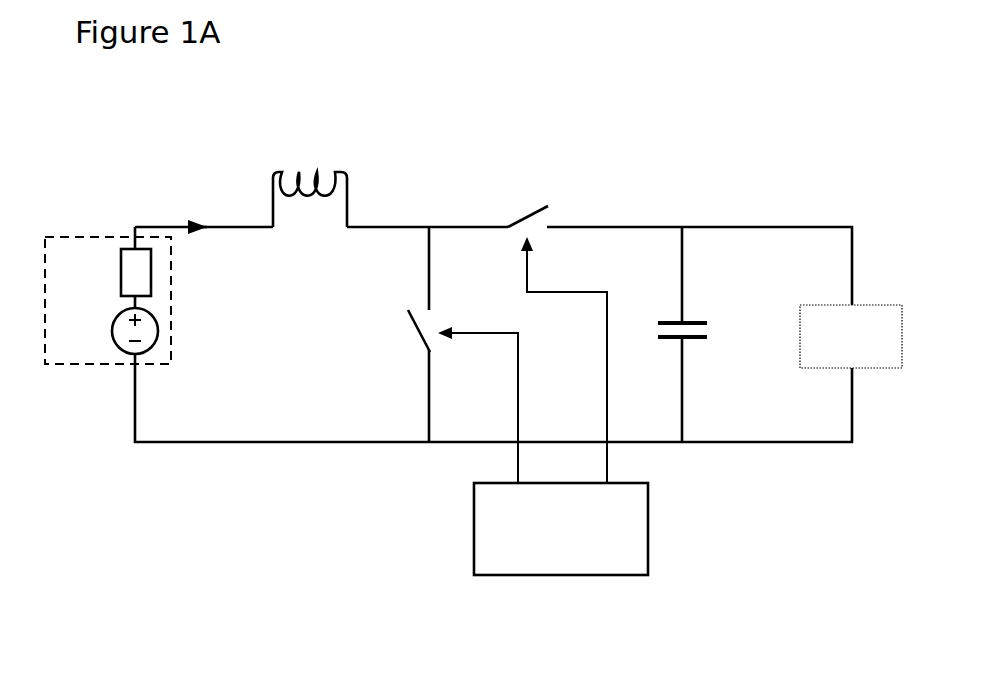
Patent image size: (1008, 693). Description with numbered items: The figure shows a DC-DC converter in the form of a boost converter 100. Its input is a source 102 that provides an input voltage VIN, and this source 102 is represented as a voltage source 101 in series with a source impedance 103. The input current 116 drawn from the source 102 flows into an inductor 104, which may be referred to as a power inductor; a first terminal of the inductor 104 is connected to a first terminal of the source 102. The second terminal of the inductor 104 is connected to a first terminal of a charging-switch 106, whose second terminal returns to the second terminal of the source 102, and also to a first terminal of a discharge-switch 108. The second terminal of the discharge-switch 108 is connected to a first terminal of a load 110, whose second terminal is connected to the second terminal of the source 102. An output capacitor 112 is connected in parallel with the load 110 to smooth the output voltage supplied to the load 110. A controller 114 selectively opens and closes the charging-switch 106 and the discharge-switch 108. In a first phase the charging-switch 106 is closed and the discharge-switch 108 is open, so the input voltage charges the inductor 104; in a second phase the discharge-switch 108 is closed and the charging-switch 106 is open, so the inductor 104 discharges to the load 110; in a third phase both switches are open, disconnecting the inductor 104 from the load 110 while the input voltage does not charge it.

The boost converter 100 is at (613, 197).
The voltage source 101 is at (118, 348).
The source 102 is at (67, 365).
The source impedance 103 is at (121, 273).
The inductor 104 is at (350, 192).
The charging-switch 106 is at (424, 327).
The discharge-switch 108 is at (525, 217).
The load 110 is at (875, 367).
The output capacitor 112 is at (695, 322).
The controller 114 is at (648, 528).
The input current 116 is at (168, 183).